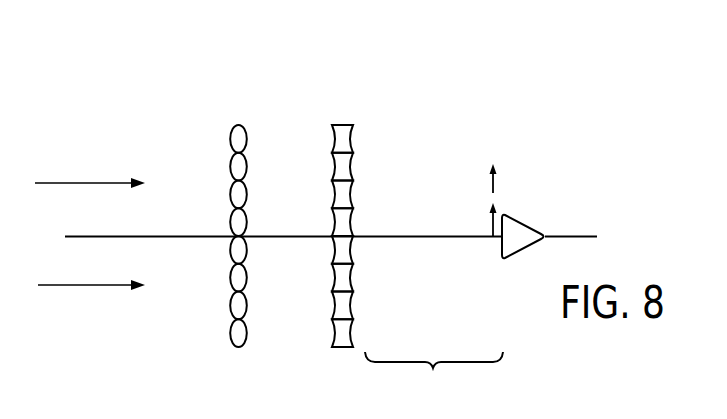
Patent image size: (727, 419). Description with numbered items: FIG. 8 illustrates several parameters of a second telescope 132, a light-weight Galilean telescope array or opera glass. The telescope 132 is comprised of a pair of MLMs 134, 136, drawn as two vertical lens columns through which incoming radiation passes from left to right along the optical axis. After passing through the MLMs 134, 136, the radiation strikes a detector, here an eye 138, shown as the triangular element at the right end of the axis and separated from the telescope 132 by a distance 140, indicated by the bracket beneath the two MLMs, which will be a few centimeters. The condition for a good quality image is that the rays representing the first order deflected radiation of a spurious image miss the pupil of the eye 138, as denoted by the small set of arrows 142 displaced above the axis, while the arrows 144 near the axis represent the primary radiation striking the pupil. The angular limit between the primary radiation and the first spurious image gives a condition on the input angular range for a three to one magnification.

The second telescope 132 is at (550, 92).
The MLM 134 is at (241, 137).
The MLM 136 is at (343, 131).
The eye 138 is at (527, 224).
The distance 140 is at (434, 379).
The arrows 142 is at (491, 192).
The arrows 144 is at (492, 227).